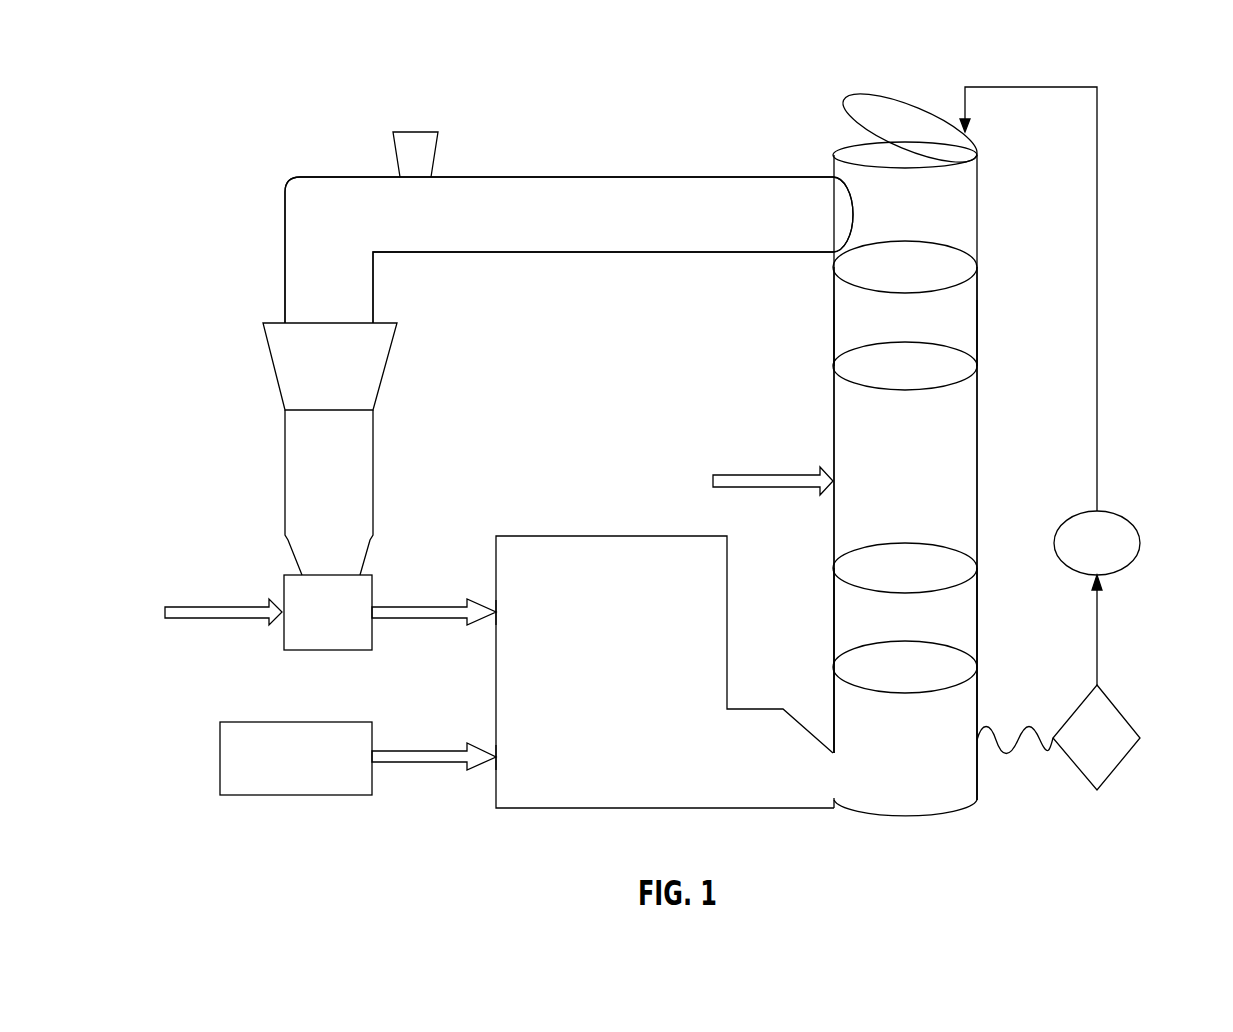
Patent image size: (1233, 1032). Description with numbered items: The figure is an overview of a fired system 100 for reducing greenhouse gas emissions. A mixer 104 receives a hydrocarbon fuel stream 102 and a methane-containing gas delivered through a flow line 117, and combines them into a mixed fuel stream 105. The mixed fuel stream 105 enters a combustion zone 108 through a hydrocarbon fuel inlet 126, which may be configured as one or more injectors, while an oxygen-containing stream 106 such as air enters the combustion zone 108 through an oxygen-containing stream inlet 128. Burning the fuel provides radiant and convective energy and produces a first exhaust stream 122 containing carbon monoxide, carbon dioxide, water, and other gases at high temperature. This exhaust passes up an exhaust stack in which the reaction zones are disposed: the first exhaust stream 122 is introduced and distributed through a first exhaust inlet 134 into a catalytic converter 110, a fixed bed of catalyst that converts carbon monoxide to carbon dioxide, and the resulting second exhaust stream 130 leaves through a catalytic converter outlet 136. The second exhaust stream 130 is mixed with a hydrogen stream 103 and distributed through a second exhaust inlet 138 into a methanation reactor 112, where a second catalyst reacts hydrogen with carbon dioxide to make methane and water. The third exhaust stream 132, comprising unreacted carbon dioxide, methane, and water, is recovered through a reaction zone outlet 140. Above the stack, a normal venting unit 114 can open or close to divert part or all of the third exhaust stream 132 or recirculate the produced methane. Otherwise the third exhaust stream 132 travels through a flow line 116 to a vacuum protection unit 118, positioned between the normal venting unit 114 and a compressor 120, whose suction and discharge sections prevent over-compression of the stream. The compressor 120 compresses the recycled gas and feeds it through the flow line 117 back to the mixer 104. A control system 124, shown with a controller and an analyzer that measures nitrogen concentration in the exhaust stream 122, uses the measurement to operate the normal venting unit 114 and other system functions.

The system 100 is at (250, 82).
The hydrocarbon fuel stream 102 is at (218, 622).
The hydrogen stream 103 is at (757, 473).
The mixer 104 is at (307, 600).
The mixed fuel stream 105 is at (418, 622).
The oxygen-containing stream 106 is at (307, 740).
The combustion zone 108 is at (565, 557).
The catalytic converter 110 is at (950, 662).
The methanation reactor 112 is at (963, 317).
The normal venting unit 114 is at (875, 93).
The flow line 116 is at (672, 175).
The flow line 117 is at (285, 483).
The vacuum protection unit 118 is at (408, 160).
The compressor 120 is at (295, 368).
The first exhaust stream 122 is at (958, 778).
The control system 124 is at (1142, 545).
The hydrocarbon fuel inlet 126 is at (497, 612).
The oxygen-containing stream inlet 128 is at (497, 757).
The second exhaust stream 130 is at (960, 473).
The third exhaust stream 132 is at (500, 185).
The first exhaust inlet 134 is at (878, 692).
The catalytic converter outlet 136 is at (858, 568).
The second exhaust inlet 138 is at (877, 390).
The reaction zone outlet 140 is at (943, 262).